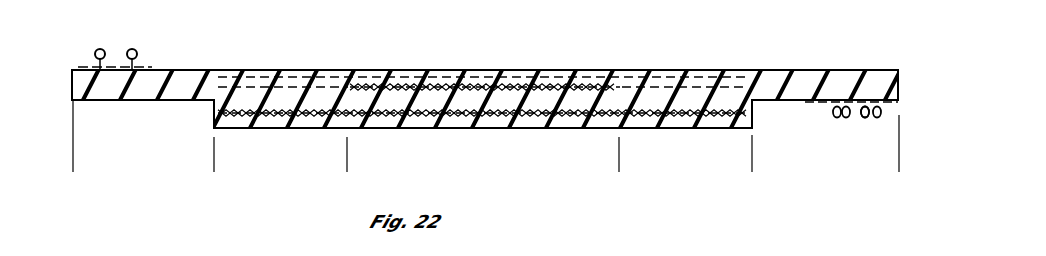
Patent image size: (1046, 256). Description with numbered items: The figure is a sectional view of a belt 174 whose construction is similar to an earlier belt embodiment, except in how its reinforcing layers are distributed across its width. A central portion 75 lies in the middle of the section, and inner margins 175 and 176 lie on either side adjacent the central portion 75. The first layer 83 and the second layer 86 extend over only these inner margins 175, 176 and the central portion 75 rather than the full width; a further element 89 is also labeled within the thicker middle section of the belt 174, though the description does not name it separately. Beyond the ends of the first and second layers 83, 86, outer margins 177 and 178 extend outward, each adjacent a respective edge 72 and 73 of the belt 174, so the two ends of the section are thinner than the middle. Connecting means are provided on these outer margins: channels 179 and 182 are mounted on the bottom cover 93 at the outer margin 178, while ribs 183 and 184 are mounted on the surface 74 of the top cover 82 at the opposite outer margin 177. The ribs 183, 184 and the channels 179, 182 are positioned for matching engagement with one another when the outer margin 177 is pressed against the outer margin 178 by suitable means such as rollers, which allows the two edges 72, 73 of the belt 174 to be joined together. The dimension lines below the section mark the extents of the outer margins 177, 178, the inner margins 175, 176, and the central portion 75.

The rib 183 is at (100, 48).
The rib 184 is at (134, 48).
The top cover 82 is at (183, 78).
The surface 74 is at (335, 72).
The edge 72 is at (77, 88).
The belt 174 is at (662, 67).
The first layer 83 is at (751, 96).
The second layer 86 is at (752, 92).
The bottom cover 93 is at (840, 104).
The edge 73 is at (898, 78).
The channel 179 is at (832, 109).
The channel 182 is at (856, 112).
The reinforcement mesh 89 is at (567, 124).
The outer margin 177 is at (214, 160).
The inner margin 176 is at (347, 160).
The central portion 75 is at (619, 160).
The inner margin 175 is at (752, 160).
The outer margin 178 is at (899, 160).